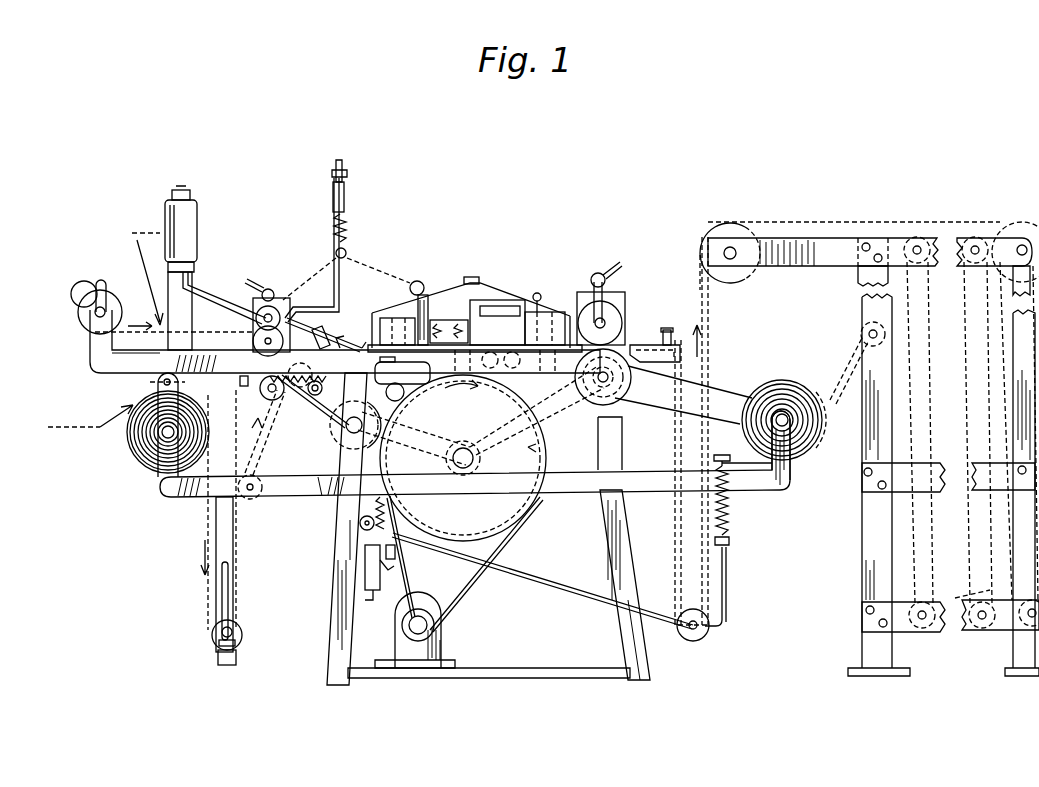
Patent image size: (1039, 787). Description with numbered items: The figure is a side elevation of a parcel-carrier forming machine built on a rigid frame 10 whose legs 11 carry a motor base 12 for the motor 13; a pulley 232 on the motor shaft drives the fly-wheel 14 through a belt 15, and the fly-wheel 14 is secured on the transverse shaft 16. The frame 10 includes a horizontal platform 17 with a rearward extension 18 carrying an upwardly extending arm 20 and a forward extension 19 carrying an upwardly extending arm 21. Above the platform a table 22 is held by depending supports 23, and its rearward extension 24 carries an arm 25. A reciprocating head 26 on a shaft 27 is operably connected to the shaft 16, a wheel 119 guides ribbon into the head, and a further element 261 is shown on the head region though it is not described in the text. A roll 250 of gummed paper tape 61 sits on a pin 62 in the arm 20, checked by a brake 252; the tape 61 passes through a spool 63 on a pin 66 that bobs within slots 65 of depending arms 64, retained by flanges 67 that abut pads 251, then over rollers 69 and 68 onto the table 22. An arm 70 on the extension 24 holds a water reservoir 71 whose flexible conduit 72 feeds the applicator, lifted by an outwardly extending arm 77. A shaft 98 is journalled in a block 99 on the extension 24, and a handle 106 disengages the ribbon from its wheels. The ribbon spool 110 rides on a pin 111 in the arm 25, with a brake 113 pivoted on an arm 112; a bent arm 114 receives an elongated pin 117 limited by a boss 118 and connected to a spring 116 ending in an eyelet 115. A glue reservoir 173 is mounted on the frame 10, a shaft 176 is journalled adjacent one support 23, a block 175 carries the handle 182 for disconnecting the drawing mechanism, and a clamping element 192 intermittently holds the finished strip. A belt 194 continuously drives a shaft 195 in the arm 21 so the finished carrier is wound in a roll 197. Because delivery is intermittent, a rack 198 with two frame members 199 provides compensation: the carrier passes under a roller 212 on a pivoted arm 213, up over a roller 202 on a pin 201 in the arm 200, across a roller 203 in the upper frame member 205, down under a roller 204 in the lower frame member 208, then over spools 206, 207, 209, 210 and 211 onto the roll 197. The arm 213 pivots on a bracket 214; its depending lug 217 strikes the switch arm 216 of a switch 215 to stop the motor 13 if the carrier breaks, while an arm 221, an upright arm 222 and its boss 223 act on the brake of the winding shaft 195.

The frame 10 is at (332, 612).
The supports or legs 11 is at (640, 630).
The motor support or base 12 is at (548, 668).
The motor 13 is at (436, 620).
The fly-wheel 14 is at (540, 512).
The belt 15 is at (470, 580).
The transversely extending shaft 16 is at (470, 462).
The platform 17 is at (580, 468).
The rearwardly extending extension 18 is at (325, 498).
The forwardly extending extension 19 is at (643, 498).
The upwardly extending arm 20 is at (160, 488).
The upwardly extending arm 21 is at (790, 468).
The table 22 is at (540, 366).
The supports or depending frame members 23 is at (345, 462).
The rearward extension 24 is at (126, 362).
The upwardly extending arm 25 is at (90, 346).
The reciprocating head or tool holder 26 is at (510, 300).
The shaft 27 is at (478, 280).
The paper tape 61 is at (365, 345).
The pin 62 is at (178, 425).
The spool 63 is at (212, 630).
The depending arms 64 is at (233, 551).
The elongated vertical slots 65 is at (228, 585).
The pin 66 is at (235, 643).
The flanges 67 is at (233, 630).
The roller 68 is at (312, 336).
The roller 69 is at (252, 475).
The upwardly extending arm 70 is at (185, 313).
The water reservoir 71 is at (197, 233).
The flexible conduit 72 is at (222, 287).
The outwardly extending arm 77 is at (347, 337).
The shaft 98 is at (262, 341).
The block 99 is at (256, 318).
The handle 106 is at (266, 289).
The spool 110 is at (80, 310).
The pin 111 is at (112, 306).
The upwardly extending arm 112 is at (104, 285).
The brake 113 is at (78, 286).
The angularly bent upwardly extending arm 114 is at (334, 200).
The eyelet 115 is at (347, 253).
The spring 116 is at (347, 225).
The elongated pin 117 is at (345, 197).
The boss 118 is at (344, 170).
The wheel 119 is at (418, 282).
The glue reservoir 173 is at (397, 379).
The block 175 is at (620, 300).
The shaft 176 is at (612, 405).
The handle 182 is at (605, 272).
The clamping element 192 is at (667, 328).
The belt 194 is at (727, 372).
The shaft 195 is at (778, 400).
The roll 197 is at (676, 548).
The rack 198 is at (815, 238).
The supports or frame members 199 is at (865, 595).
The extension or arm 200 is at (775, 240).
The pin 201 is at (730, 247).
The roller 202 is at (700, 248).
The roller 203 is at (1028, 215).
The roller 204 is at (962, 598).
The upper frame member 205 is at (880, 238).
The spool 206 is at (975, 238).
The spool 207 is at (975, 630).
The lower frame member 208 is at (1010, 630).
The spool 209 is at (925, 240).
The spool 210 is at (922, 632).
The spool 211 is at (862, 334).
The roller 212 is at (710, 633).
The arm 213 is at (590, 594).
The bracket 214 is at (362, 528).
The switch 215 is at (375, 600).
The switch arm 216 is at (394, 566).
The depending lug 217 is at (396, 550).
The arm 221 is at (729, 508).
The arm 222 is at (726, 604).
The boss 223 is at (729, 540).
The pulley 232 is at (447, 640).
The roll 250 is at (128, 452).
The compressible boss or pad 251 is at (240, 655).
The brake 252 is at (157, 384).
The knob 261 is at (540, 296).